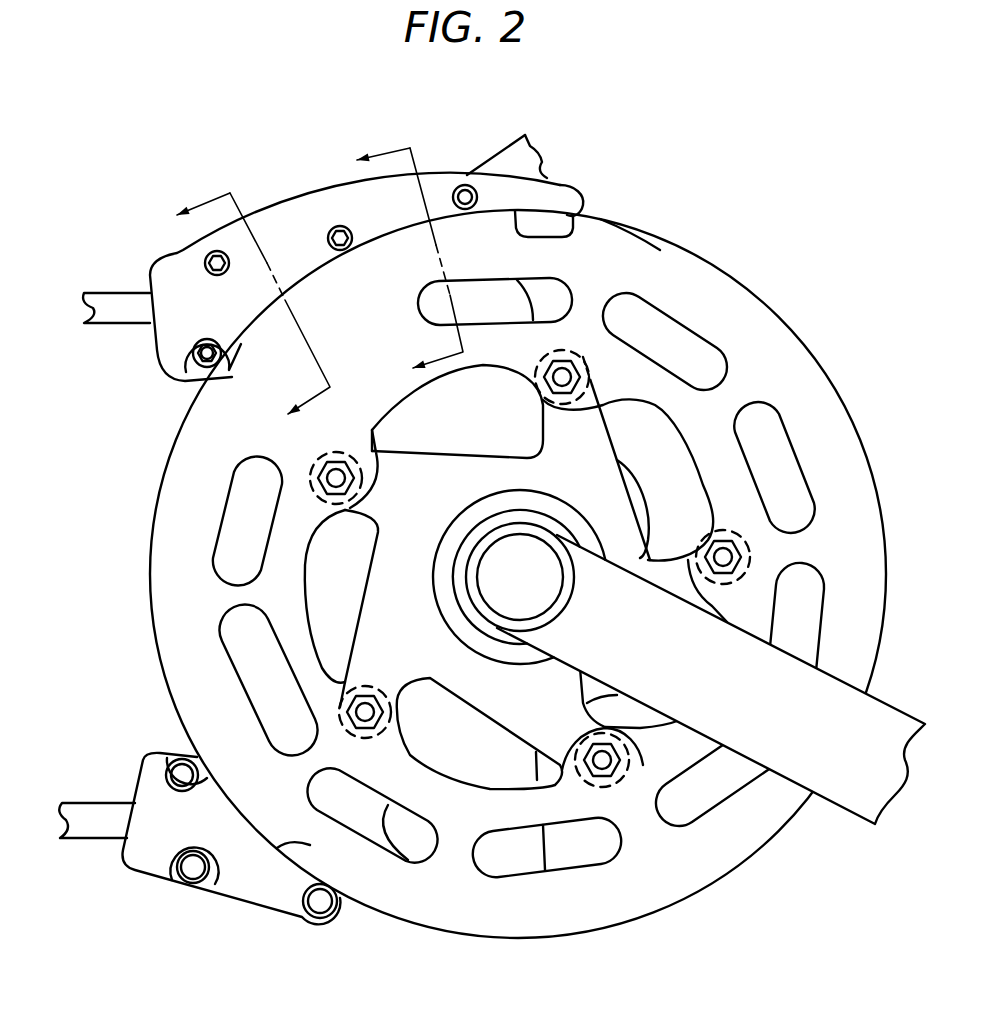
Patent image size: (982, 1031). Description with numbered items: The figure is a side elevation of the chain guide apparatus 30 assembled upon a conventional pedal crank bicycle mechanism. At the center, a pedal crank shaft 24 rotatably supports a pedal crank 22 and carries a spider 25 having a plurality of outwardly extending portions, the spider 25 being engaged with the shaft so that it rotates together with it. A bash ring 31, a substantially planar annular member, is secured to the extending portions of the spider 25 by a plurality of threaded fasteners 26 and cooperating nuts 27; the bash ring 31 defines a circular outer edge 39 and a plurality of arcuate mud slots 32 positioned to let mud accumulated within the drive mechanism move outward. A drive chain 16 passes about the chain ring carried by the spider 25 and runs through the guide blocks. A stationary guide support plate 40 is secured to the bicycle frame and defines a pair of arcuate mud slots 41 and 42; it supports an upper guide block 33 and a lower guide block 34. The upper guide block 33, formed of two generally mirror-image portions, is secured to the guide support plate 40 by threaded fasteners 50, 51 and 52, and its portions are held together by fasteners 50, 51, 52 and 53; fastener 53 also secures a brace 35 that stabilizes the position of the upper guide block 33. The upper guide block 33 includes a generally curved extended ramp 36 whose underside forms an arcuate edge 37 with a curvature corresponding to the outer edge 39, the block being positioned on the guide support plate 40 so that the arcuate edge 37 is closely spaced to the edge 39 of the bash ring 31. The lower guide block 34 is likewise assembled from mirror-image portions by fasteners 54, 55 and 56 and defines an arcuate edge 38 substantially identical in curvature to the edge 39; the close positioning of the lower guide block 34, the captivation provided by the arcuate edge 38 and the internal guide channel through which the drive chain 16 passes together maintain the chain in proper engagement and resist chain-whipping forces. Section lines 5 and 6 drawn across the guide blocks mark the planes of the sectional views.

The section line 5- 5 is at (392, 271).
The section line 6- 6 is at (241, 313).
The drive chain 16 is at (128, 323).
The pedal crank 22 is at (832, 800).
The pedal crank shaft 24 is at (504, 576).
The spider 25 is at (612, 435).
The threaded fasteners 26 is at (716, 548).
The cooperating nuts 27 is at (750, 557).
The chain guide apparatus 30 is at (405, 231).
The bash ring 31 is at (707, 260).
The arcuate mud slots 32 is at (662, 322).
The upper guide block 33 is at (293, 190).
The lower guide block 34 is at (211, 893).
The brace 35 is at (496, 156).
The extended ramp 36 is at (456, 173).
The arcuate edge 37 is at (540, 237).
The arcuate edge 38 is at (310, 845).
The circular outer edge 39 is at (640, 228).
The guide support plate 40 is at (372, 432).
The arcuate mud slot 41 is at (533, 300).
The arcuate mud slot 42 is at (408, 860).
The threaded fastener 50 is at (212, 272).
The threaded fastener 51 is at (215, 337).
The threaded fastener 52 is at (350, 247).
The fastener 53 is at (478, 197).
The fastener 54 is at (170, 758).
The fastener 55 is at (190, 851).
The fastener 56 is at (303, 894).